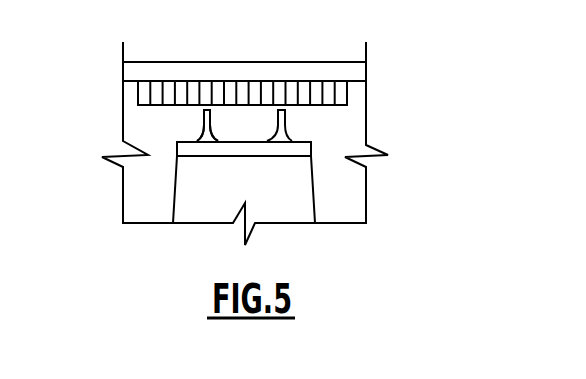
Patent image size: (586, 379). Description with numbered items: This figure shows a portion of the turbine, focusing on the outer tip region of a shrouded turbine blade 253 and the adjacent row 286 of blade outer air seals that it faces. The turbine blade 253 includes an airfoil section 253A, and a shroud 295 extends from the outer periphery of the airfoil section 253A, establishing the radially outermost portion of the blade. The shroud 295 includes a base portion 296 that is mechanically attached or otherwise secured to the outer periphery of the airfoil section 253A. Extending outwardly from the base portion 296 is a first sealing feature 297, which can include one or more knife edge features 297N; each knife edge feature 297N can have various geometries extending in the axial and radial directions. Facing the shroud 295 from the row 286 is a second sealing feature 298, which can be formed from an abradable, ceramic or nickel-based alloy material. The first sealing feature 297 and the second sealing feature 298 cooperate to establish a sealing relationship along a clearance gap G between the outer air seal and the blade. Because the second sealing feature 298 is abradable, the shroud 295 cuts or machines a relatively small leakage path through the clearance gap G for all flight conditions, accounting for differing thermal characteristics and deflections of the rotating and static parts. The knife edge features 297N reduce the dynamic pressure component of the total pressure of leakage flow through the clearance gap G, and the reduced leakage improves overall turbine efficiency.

The turbine blade 253 is at (318, 208).
The airfoil section 253A is at (302, 182).
The row of BOAS 286 is at (323, 62).
The shroud 295 is at (320, 137).
The base portion 296 is at (313, 150).
The first sealing feature 297 is at (184, 124).
The knife edge feature 297N is at (280, 130).
The second sealing feature 298 is at (352, 90).
The clearance gap G is at (140, 138).